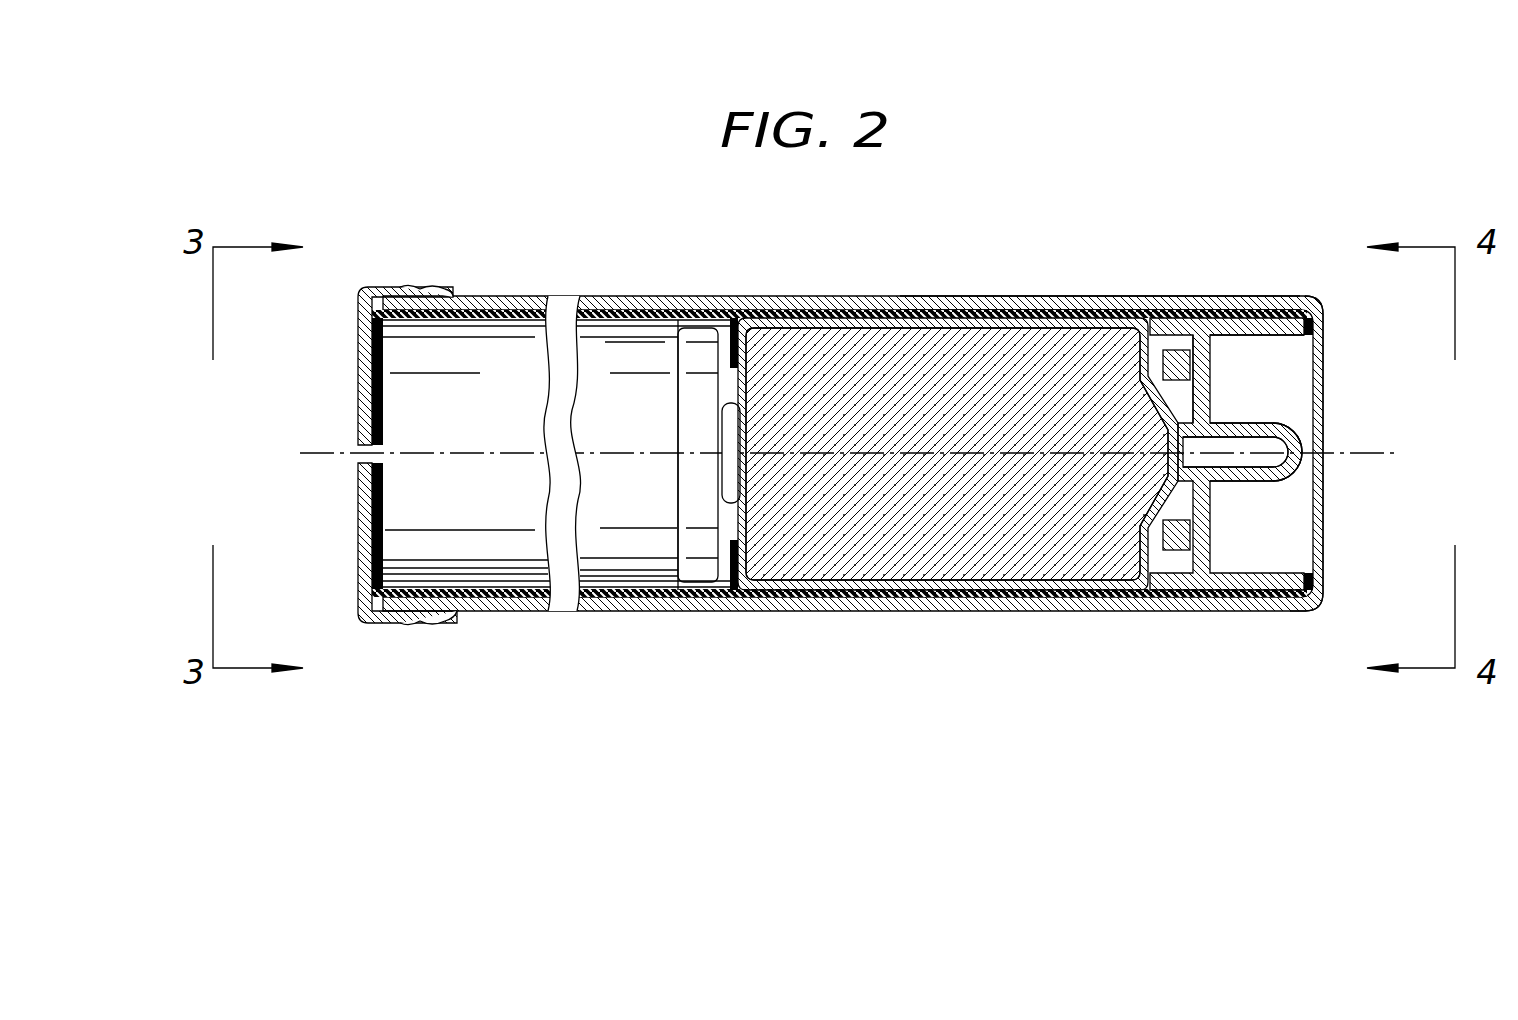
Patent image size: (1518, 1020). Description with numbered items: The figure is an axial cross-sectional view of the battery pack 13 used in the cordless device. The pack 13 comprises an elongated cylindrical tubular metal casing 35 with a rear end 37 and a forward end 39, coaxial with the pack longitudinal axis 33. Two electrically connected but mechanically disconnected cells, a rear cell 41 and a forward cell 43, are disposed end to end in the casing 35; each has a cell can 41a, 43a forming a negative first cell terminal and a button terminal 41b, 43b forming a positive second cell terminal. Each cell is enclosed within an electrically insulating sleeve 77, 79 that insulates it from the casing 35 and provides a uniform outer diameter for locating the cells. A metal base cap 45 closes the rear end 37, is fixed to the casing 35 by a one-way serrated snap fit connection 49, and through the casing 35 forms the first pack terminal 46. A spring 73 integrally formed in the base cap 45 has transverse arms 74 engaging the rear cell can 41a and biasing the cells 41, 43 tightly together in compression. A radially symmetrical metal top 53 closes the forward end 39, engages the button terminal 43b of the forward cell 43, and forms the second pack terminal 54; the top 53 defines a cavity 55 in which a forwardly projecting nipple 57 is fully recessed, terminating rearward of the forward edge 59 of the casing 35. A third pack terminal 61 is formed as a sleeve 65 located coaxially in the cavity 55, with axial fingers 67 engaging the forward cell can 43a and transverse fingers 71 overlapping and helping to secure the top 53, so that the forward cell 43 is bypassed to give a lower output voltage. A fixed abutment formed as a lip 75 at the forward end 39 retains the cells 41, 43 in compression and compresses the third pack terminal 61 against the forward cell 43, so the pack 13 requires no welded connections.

The battery pack 13 is at (556, 186).
The pack longitudinal axis 33 is at (592, 453).
The casing 35 is at (613, 296).
The rear end 37 is at (412, 296).
The forward end 39 is at (1298, 617).
The rear cell 41 is at (455, 334).
The cell can 41a is at (500, 513).
The button terminal 41b is at (728, 473).
The forward cell 43 is at (922, 562).
The cell can 43a is at (894, 520).
The button terminal 43b is at (1172, 473).
The base cap 45 is at (360, 332).
The first pack terminal 46 is at (1339, 308).
The serrated snap fit connection 49 is at (434, 626).
The top 53 is at (1300, 429).
The second pack terminal 54 is at (1304, 479).
The cavity 55 is at (1298, 518).
The nipple 57 is at (1283, 481).
The forward edge 59 is at (1316, 584).
The third pack terminal 61 is at (1223, 302).
The sleeve 65 is at (1290, 340).
The axial fingers 67 is at (1190, 318).
The transverse fingers 71 is at (1208, 358).
The spring 73 is at (348, 402).
The transverse arms 74 is at (360, 437).
The lip 75 is at (1313, 320).
The insulating sleeve 77 is at (697, 310).
The insulating sleeve 79 is at (1052, 300).